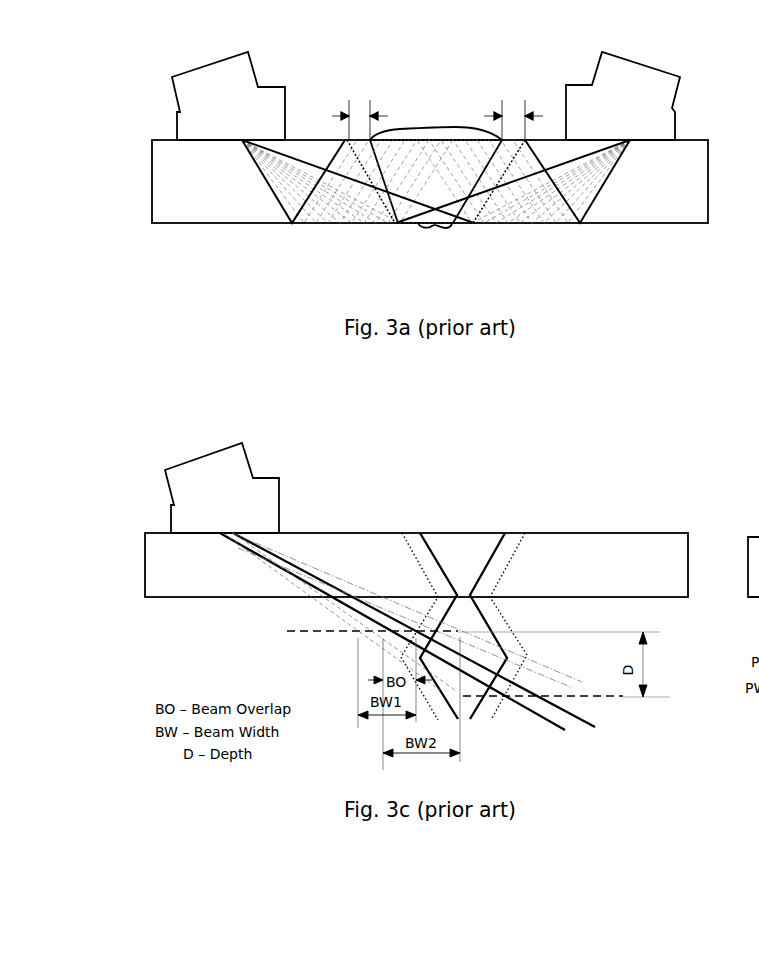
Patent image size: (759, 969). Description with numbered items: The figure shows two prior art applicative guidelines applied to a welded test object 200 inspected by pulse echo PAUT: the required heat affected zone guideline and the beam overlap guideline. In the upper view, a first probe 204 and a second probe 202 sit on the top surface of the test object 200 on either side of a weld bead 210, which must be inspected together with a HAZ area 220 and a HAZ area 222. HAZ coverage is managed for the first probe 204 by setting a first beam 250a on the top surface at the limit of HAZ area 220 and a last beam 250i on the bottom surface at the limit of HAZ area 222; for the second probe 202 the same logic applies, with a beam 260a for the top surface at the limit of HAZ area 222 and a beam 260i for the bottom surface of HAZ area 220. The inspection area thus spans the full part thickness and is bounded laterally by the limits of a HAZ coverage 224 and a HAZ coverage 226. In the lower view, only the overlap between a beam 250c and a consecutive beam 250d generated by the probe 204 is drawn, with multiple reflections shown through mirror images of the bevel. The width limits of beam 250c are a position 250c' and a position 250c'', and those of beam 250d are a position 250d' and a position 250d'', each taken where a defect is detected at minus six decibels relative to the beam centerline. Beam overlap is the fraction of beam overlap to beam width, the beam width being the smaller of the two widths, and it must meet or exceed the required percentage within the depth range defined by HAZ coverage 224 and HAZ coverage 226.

In FIG. 3A, the test object 200 is at (683, 157).
In FIG. 3C, the test object 200 is at (636, 552).
In FIG. 3A, the second probe 202 is at (620, 78).
In FIG. 3A, the first probe 204 is at (185, 83).
In FIG. 3C, the first probe 204 is at (200, 483).
In FIG. 3A, the weld bead 210 is at (420, 128).
In FIG. 3A, the HAZ area 220 is at (359, 113).
In FIG. 3A, the HAZ area 222 is at (513, 113).
In FIG. 3A, the HAZ coverage 224 is at (352, 205).
In FIG. 3C, the HAZ coverage 224 is at (407, 543).
In FIG. 3A, the HAZ coverage 226 is at (497, 228).
In FIG. 3C, the HAZ coverage 226 is at (522, 540).
In FIG. 3A, the first beam 250a is at (315, 140).
In FIG. 3A, the beam 260a is at (535, 157).
In FIG. 3A, the last beam 250i is at (467, 227).
In FIG. 3A, the beam 260i is at (412, 227).
In FIG. 3C, the beam 250d is at (407, 631).
In FIG. 3C, the position 250d' is at (463, 626).
In FIG. 3C, the beam 250c is at (446, 610).
In FIG. 3C, the position 250c' is at (566, 653).
In FIG. 3C, the position 250d'' is at (339, 611).
In FIG. 3C, the position 250c'' is at (340, 665).